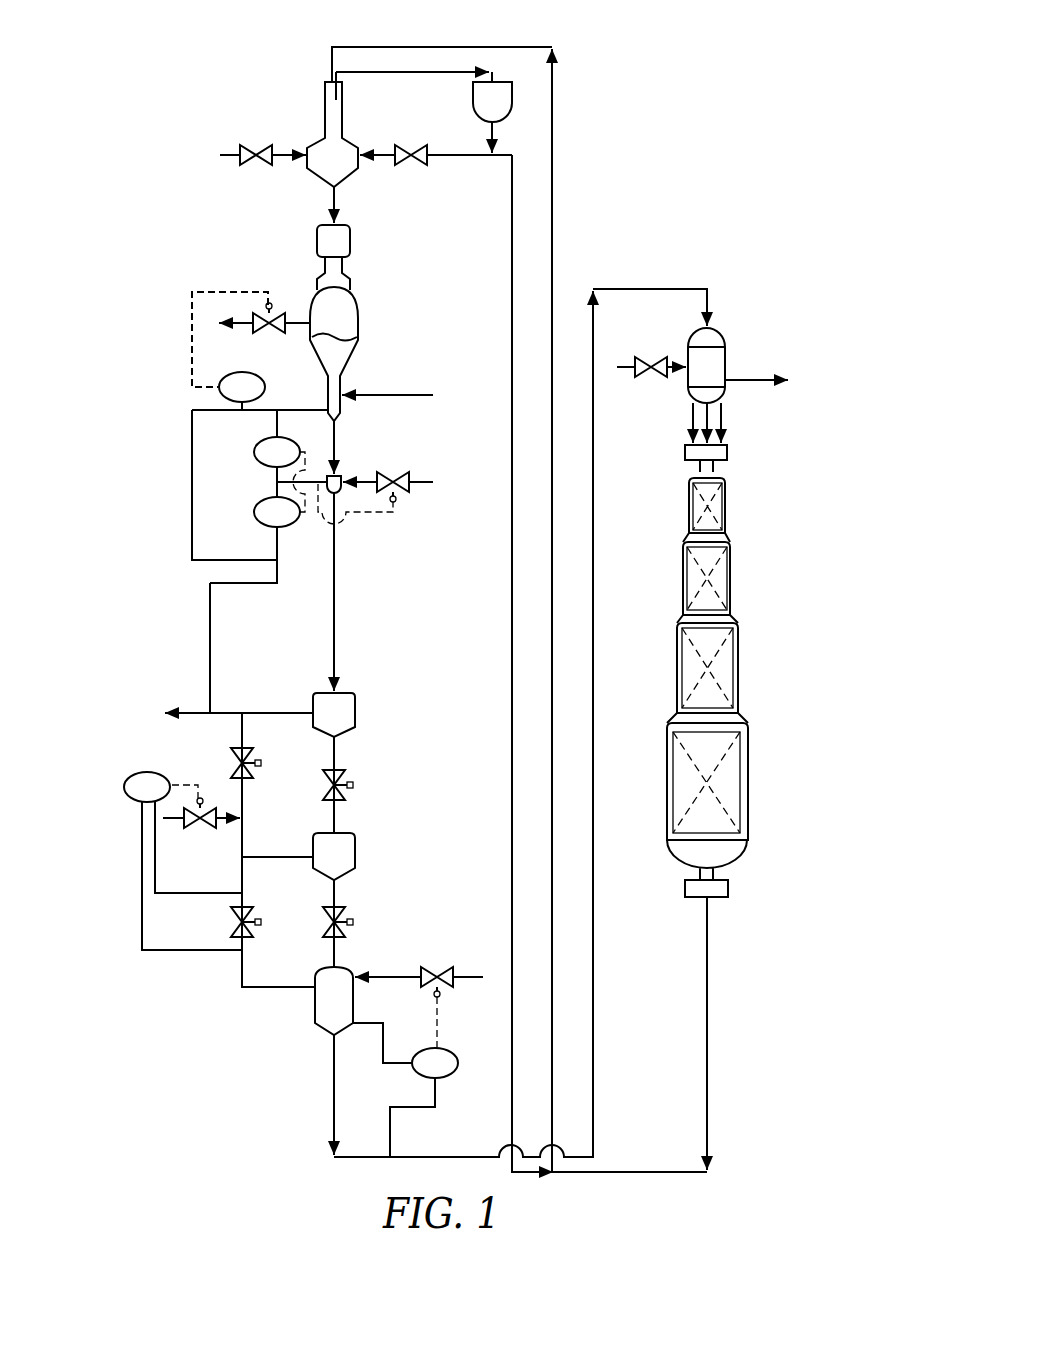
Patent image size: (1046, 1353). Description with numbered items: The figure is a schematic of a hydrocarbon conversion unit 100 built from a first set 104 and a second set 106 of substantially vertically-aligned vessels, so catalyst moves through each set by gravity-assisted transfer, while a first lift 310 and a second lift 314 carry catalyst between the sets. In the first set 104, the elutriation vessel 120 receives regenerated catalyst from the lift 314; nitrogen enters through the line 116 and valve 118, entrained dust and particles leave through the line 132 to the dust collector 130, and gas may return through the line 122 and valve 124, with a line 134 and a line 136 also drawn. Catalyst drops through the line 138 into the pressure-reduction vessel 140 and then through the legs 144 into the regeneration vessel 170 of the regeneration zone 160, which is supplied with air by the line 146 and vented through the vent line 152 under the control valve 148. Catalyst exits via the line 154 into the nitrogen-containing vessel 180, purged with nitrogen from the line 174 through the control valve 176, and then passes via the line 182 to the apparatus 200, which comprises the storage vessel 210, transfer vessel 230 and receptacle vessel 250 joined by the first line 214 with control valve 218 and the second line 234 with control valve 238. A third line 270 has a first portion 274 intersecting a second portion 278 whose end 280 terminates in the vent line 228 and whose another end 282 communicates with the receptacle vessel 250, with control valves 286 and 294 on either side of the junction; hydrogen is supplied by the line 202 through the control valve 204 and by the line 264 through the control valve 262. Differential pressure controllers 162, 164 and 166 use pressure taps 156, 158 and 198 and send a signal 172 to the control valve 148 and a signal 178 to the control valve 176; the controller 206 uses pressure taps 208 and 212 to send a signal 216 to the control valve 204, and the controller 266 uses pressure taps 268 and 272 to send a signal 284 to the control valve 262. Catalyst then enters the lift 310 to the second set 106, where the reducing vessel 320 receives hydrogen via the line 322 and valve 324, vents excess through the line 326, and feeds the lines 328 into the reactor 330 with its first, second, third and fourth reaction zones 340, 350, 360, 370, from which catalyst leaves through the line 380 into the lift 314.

The hydrocarbon conversion unit 100 is at (164, 92).
The first set of substantially vertically-aligned vessels 104 is at (291, 74).
The second set of substantially vertically-aligned vessels 106 is at (727, 281).
The line 116 is at (220, 155).
The valve 118 is at (240, 147).
The elutriation vessel 120 is at (350, 178).
The line 122 is at (455, 153).
The valve 124 is at (418, 166).
The dust collector 130 is at (473, 97).
The line 132 is at (383, 74).
The condensate line 134 is at (494, 131).
The bypass line 136 is at (511, 291).
The line 138 is at (333, 197).
The pressure-reduction vessel 140 is at (352, 243).
The legs 144 is at (286, 264).
The line 146 is at (432, 395).
The control valve 148 is at (262, 332).
The vent line 152 is at (247, 325).
The line 154 is at (336, 438).
The pressure tap 156 is at (289, 409).
The pressure tap 158 is at (309, 502).
The regeneration zone 160 is at (167, 315).
The differential pressure controller 162 is at (242, 391).
The differential pressure controller 164 is at (277, 452).
The differential pressure controller 166 is at (277, 512).
The regeneration vessel 170 is at (349, 293).
The signal 172 is at (191, 340).
The line 174 is at (433, 482).
The control valve 176 is at (385, 472).
The signal 178 is at (370, 513).
The nitrogen-containing vessel 180 is at (326, 475).
The line 182 is at (336, 587).
The pressure tap 198 is at (211, 655).
The apparatus 200 is at (117, 790).
The line 202 is at (176, 821).
The control valve 204 is at (205, 806).
The differential pressure controller 206 is at (147, 787).
The pressure tap 208 is at (160, 896).
The storage vessel 210 is at (350, 694).
The pressure tap 212 is at (141, 931).
The first line 214 is at (337, 749).
The signal 216 is at (182, 784).
The control valve 218 is at (347, 792).
The vent line 228 is at (278, 712).
The transfer vessel 230 is at (313, 840).
The second line 234 is at (333, 895).
The control valve 238 is at (343, 907).
The receptacle vessel 250 is at (354, 999).
The control valve 262 is at (430, 969).
The line 264 is at (485, 979).
The differential pressure controller 266 is at (435, 1063).
The pressure tap 268 is at (380, 1028).
The third line 270 is at (148, 984).
The pressure tap 272 is at (391, 1130).
The first portion 274 is at (300, 858).
The second portion 278 is at (225, 849).
The end 280 is at (245, 731).
The another end 282 is at (242, 978).
The signal 284 is at (440, 1033).
The control valve 286 is at (236, 749).
The control valve 294 is at (231, 922).
The first lift 310 is at (594, 731).
The second lift 314 is at (553, 225).
The reducing vessel 320 is at (722, 334).
The line 322 is at (622, 369).
The valve 324 is at (641, 357).
The line 326 is at (770, 380).
The lines 328 is at (739, 420).
The reactor 330 is at (783, 545).
The first reaction zone 340 is at (727, 504).
The second reaction zone 350 is at (732, 575).
The third reaction zone 360 is at (740, 668).
The fourth reaction zone 370 is at (749, 781).
The line 380 is at (706, 1018).